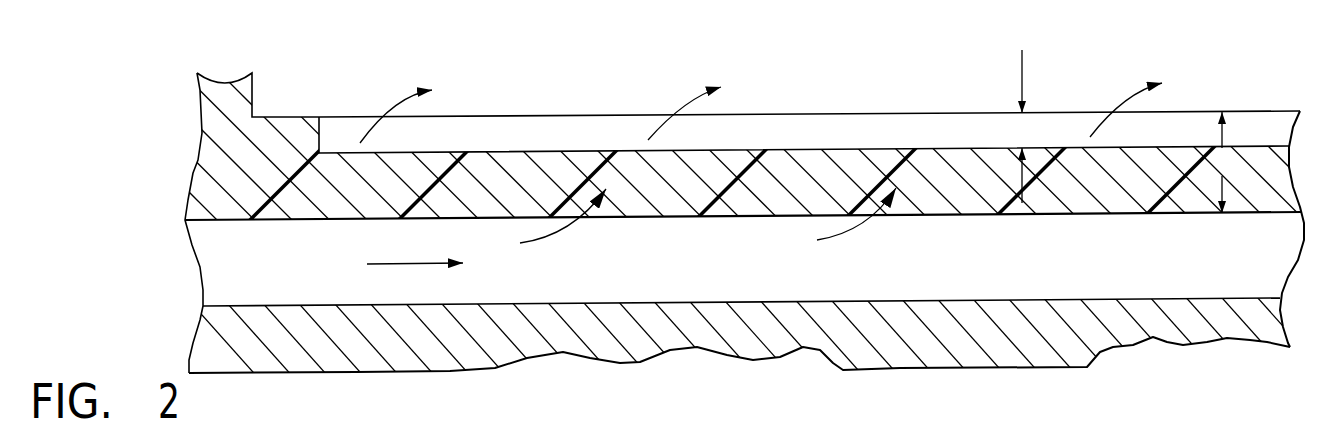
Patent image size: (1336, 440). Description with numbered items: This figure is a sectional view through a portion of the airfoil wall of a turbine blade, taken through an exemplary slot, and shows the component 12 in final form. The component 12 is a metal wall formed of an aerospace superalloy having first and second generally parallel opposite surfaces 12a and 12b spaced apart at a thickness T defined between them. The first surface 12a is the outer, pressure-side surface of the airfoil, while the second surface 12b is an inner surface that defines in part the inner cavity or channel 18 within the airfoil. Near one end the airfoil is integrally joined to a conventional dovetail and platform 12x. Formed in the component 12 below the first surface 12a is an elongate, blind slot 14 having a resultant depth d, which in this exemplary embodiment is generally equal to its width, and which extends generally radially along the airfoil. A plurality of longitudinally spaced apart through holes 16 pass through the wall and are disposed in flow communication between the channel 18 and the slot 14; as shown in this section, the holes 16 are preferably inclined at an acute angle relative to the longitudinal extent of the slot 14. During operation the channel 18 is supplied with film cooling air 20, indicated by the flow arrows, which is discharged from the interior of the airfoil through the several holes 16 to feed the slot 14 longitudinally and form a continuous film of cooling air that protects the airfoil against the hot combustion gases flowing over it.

The component 12 is at (1272, 110).
The first surface 12a is at (342, 117).
The second surface 12b is at (336, 221).
The dovetail and platform 12x is at (197, 75).
The slot 14 is at (883, 123).
The through holes 16 is at (495, 160).
The channel 18 is at (700, 274).
The film cooling air 20 is at (683, 102).
The depth d is at (1023, 68).
The thickness T is at (1222, 162).